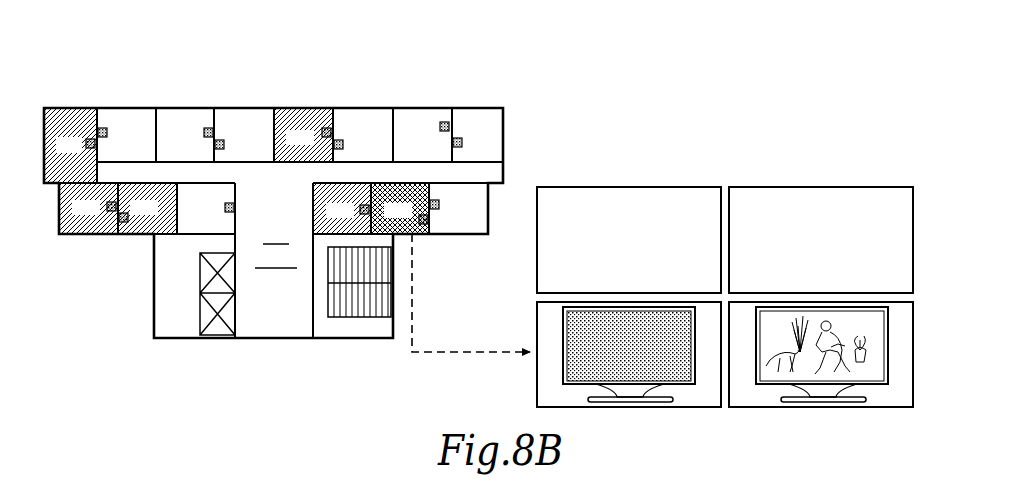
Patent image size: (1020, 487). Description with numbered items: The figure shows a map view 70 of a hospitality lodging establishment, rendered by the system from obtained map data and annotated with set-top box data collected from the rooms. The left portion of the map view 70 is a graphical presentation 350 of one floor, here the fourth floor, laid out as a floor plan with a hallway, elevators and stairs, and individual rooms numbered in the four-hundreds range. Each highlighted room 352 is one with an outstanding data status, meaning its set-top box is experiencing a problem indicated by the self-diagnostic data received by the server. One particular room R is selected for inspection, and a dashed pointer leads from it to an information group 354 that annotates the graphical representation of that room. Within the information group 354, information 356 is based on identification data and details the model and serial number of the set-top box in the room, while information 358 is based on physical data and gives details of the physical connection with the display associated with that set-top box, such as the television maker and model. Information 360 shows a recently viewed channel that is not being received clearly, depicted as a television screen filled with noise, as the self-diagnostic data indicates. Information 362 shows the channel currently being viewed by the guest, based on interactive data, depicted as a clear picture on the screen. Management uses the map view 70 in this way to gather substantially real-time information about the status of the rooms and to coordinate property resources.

The map view 70 is at (338, 66).
The graphical presentation of a floor 350 is at (205, 102).
The highlighted room with outstanding data status 352 is at (62, 121).
The information group 354 is at (874, 170).
The information based on identification data 356 is at (537, 255).
The information based on physical data 358 is at (890, 208).
The information on recently viewed channel 360 is at (538, 384).
The information on current channel 362 is at (890, 336).
The room R is at (428, 192).